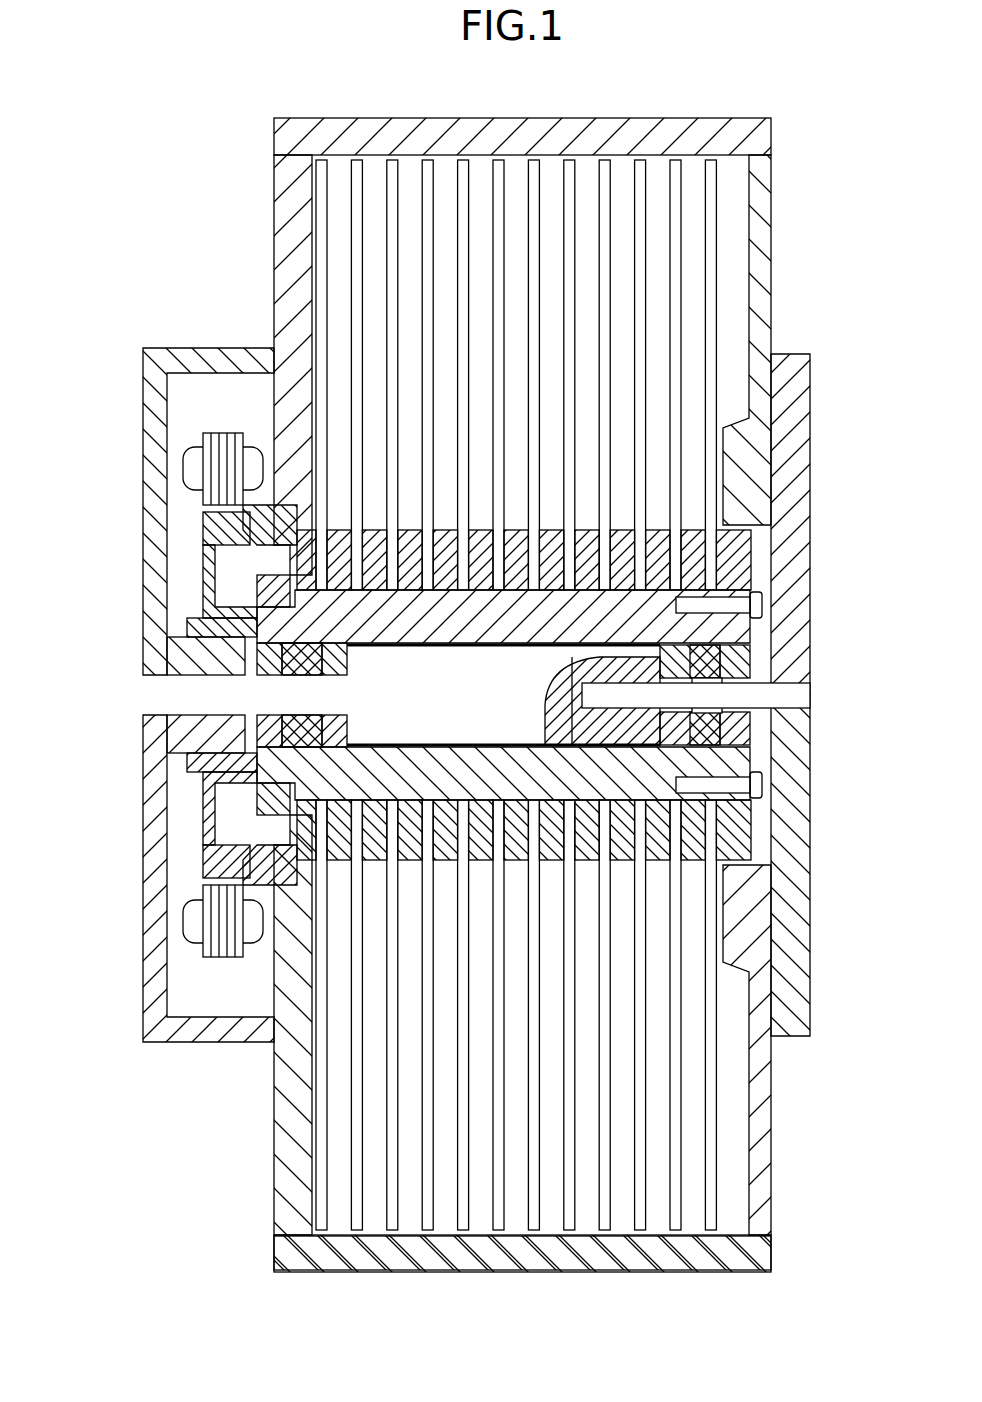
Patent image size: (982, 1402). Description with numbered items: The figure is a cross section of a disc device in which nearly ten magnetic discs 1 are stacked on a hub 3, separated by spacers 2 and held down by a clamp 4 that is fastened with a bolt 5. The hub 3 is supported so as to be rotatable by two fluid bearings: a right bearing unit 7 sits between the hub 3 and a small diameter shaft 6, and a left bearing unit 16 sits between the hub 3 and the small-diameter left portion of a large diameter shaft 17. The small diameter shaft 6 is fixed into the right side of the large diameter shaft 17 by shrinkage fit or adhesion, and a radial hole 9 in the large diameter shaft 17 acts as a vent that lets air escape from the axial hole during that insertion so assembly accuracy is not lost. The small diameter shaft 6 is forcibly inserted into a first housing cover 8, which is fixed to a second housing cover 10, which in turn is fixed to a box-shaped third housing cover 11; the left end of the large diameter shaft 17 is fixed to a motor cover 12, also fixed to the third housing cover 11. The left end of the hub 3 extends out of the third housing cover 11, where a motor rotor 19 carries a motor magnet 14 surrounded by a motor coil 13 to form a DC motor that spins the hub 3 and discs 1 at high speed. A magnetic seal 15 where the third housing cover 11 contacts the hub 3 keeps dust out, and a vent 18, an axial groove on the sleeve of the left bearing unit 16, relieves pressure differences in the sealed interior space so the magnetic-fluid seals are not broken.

The magnetic disc 1 is at (710, 190).
The spacer 2 is at (695, 540).
The hub 3 is at (738, 632).
The clamp 4 is at (740, 562).
The bolt 5 is at (745, 606).
The small diameter shaft 6 is at (800, 697).
The right bearing unit 7 is at (760, 766).
The first housing cover 8 is at (805, 843).
The radial hole 9 is at (698, 804).
The second housing cover 10 is at (765, 1097).
The third housing cover 11 is at (625, 1268).
The motor cover 12 is at (195, 350).
The motor coil 13 is at (203, 437).
The motor magnet 14 is at (208, 525).
The magnetic seal 15 is at (215, 582).
The left bearing unit 16 is at (245, 628).
The large diameter shaft 17 is at (355, 695).
The vent 18 is at (240, 760).
The motor rotor 19 is at (205, 852).